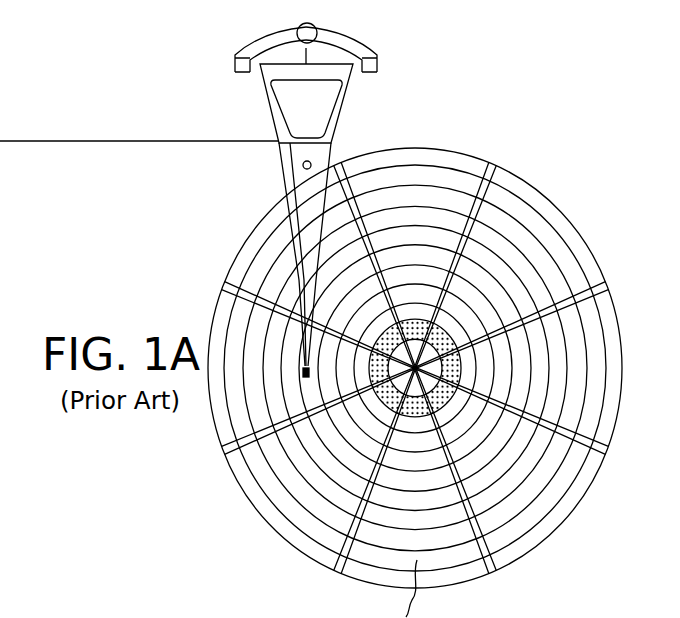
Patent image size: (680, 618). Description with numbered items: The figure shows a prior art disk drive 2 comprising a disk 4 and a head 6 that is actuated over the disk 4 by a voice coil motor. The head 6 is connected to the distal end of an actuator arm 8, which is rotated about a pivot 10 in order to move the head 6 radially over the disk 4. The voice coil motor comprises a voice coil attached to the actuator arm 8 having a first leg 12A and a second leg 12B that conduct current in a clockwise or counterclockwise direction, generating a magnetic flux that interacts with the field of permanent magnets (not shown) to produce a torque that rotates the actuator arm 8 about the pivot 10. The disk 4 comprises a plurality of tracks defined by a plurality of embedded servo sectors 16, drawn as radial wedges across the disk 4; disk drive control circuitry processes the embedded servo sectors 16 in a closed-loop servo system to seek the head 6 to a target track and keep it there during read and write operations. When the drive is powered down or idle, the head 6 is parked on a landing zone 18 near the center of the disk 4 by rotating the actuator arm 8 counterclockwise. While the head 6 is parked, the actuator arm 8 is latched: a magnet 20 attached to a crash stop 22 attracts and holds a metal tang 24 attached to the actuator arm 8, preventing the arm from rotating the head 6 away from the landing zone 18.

The disk drive 2 is at (520, 95).
The disk 4 is at (534, 183).
The head 6 is at (304, 385).
The actuator arm 8 is at (284, 182).
The pivot 10 is at (307, 170).
The first leg 12A is at (268, 107).
The second leg 12B is at (345, 106).
The embedded servo sectors 16 is at (340, 166).
The landing zone 18 is at (462, 373).
The magnet 20 is at (235, 62).
The crash stop 22 is at (368, 48).
The metal tang 24 is at (307, 52).